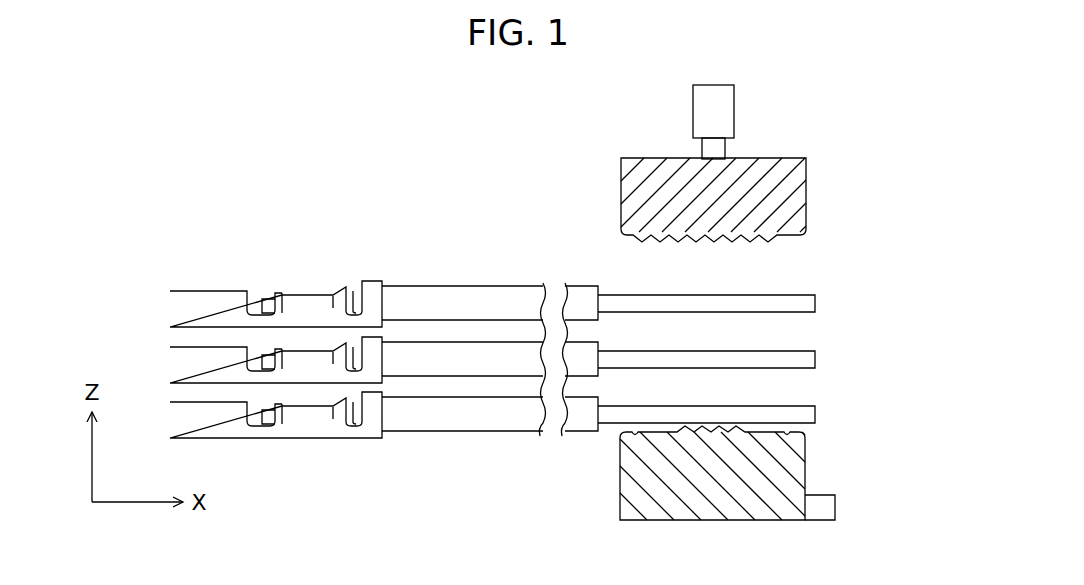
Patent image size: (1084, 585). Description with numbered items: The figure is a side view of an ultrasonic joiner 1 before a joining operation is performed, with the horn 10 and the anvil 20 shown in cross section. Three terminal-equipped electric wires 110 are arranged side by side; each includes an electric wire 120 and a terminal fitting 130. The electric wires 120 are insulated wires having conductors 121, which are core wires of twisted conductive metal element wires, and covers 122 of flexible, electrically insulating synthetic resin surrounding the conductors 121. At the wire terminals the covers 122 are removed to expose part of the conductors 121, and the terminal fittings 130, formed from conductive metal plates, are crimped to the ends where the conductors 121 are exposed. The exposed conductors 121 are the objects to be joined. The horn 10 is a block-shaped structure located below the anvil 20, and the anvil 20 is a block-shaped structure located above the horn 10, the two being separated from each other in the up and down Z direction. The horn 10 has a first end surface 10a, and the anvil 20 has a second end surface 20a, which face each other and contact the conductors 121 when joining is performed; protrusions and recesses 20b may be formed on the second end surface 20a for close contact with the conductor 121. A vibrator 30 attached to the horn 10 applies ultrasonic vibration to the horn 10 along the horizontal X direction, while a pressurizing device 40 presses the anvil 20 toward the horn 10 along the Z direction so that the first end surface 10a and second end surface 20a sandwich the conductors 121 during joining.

The ultrasonic joiner 1 is at (606, 136).
The terminal-equipped electric wires 110 is at (165, 420).
The terminal fittings 130 is at (214, 401).
The electric wires 120 is at (448, 399).
The conductors 121 is at (817, 302).
The covers 122 is at (513, 300).
The pressurizing device 40 is at (736, 108).
The anvil 20 is at (808, 205).
The second end surface 20a is at (794, 237).
The protrusions and recesses 20b is at (652, 241).
The horn 10 is at (808, 455).
The first end surface 10a is at (773, 430).
The vibrator 30 is at (836, 500).